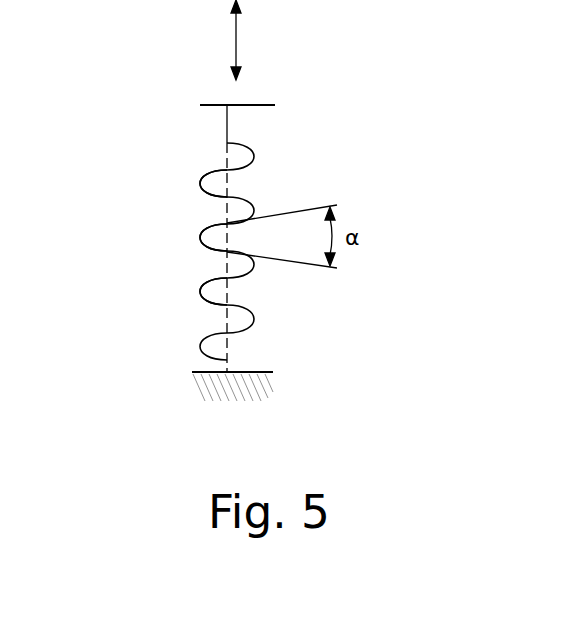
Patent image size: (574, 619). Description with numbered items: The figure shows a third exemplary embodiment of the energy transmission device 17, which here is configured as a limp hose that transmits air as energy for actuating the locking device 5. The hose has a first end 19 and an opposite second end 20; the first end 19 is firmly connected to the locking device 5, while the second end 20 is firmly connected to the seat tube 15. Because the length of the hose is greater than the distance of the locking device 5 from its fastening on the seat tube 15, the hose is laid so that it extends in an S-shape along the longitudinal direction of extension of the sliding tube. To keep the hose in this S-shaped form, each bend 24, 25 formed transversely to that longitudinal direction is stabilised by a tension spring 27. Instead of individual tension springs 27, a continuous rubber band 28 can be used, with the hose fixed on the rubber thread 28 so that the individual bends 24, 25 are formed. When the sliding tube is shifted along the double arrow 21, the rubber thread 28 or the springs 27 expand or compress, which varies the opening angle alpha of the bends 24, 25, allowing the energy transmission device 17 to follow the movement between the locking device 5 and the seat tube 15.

The locking device 5 is at (270, 105).
The seat tube 15 is at (192, 372).
The energy transmission device 17 is at (226, 128).
The first end 19 is at (248, 107).
The second end 20 is at (227, 372).
The double arrow 21 is at (236, 14).
The bend 24 is at (255, 318).
The bend 25 is at (203, 238).
The tension spring 27 is at (213, 268).
The rubber band 28 is at (205, 190).